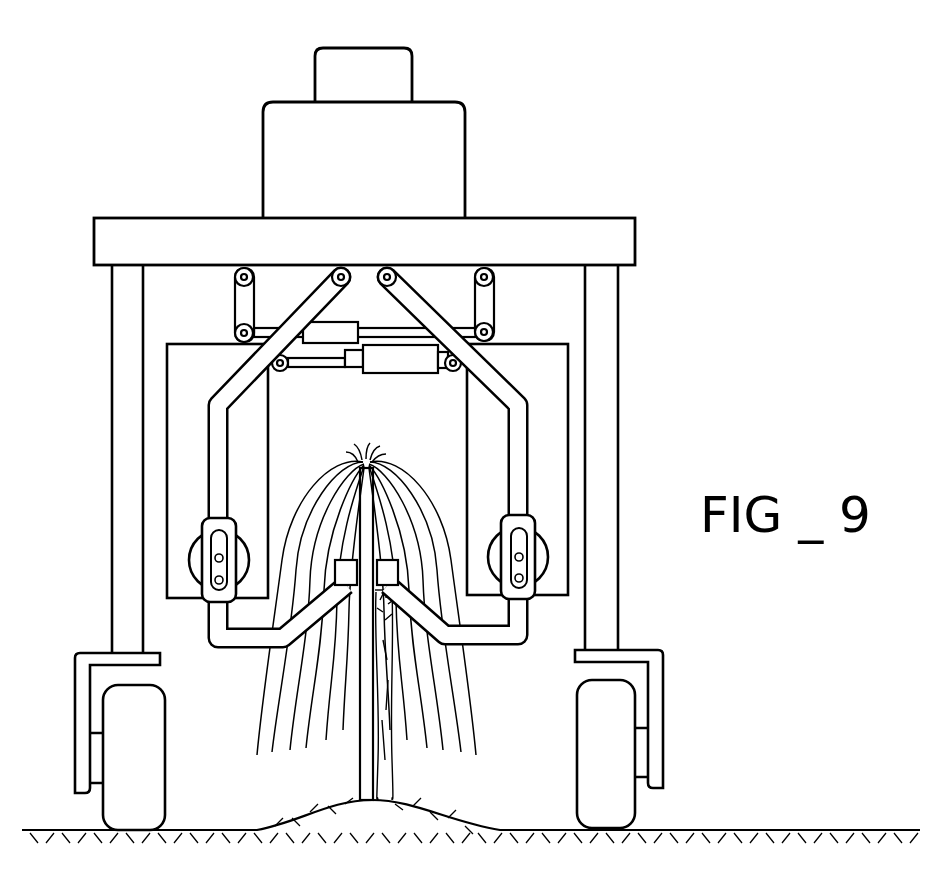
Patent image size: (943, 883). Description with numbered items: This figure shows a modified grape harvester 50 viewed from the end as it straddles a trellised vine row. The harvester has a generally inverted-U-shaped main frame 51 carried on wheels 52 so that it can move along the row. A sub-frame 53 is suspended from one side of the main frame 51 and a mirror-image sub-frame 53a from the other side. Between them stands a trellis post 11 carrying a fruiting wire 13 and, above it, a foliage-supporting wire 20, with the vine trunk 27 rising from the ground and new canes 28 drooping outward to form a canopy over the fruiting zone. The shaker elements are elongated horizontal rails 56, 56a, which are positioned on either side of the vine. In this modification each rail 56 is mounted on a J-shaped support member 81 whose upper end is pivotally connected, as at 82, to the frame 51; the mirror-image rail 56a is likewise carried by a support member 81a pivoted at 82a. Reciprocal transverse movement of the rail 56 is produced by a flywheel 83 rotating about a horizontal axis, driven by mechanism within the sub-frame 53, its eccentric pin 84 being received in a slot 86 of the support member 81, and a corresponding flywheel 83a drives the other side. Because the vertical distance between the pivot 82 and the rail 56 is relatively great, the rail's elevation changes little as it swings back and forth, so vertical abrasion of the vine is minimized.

The post 11 is at (360, 768).
The fruiting wire 13 is at (376, 545).
The foliage-supporting wire 20 is at (365, 458).
The vine trunk 27 is at (392, 766).
The new canes 28 is at (268, 720).
The harvester 50 is at (519, 179).
The frame 51 is at (190, 237).
The wheels 52 is at (148, 777).
The sub-frame 53 is at (568, 440).
The sub-frame 53a is at (167, 440).
The rail 56 is at (392, 566).
The rail 56a is at (340, 566).
The J-shaped support member 81 is at (497, 652).
The J-shaped support member 81a is at (244, 652).
The pivot 82 is at (392, 270).
The pivot 82a is at (338, 270).
The flywheel 83 is at (548, 566).
The flywheel 83a is at (188, 562).
The eccentric pin 84 is at (524, 584).
The slot 86 is at (522, 530).